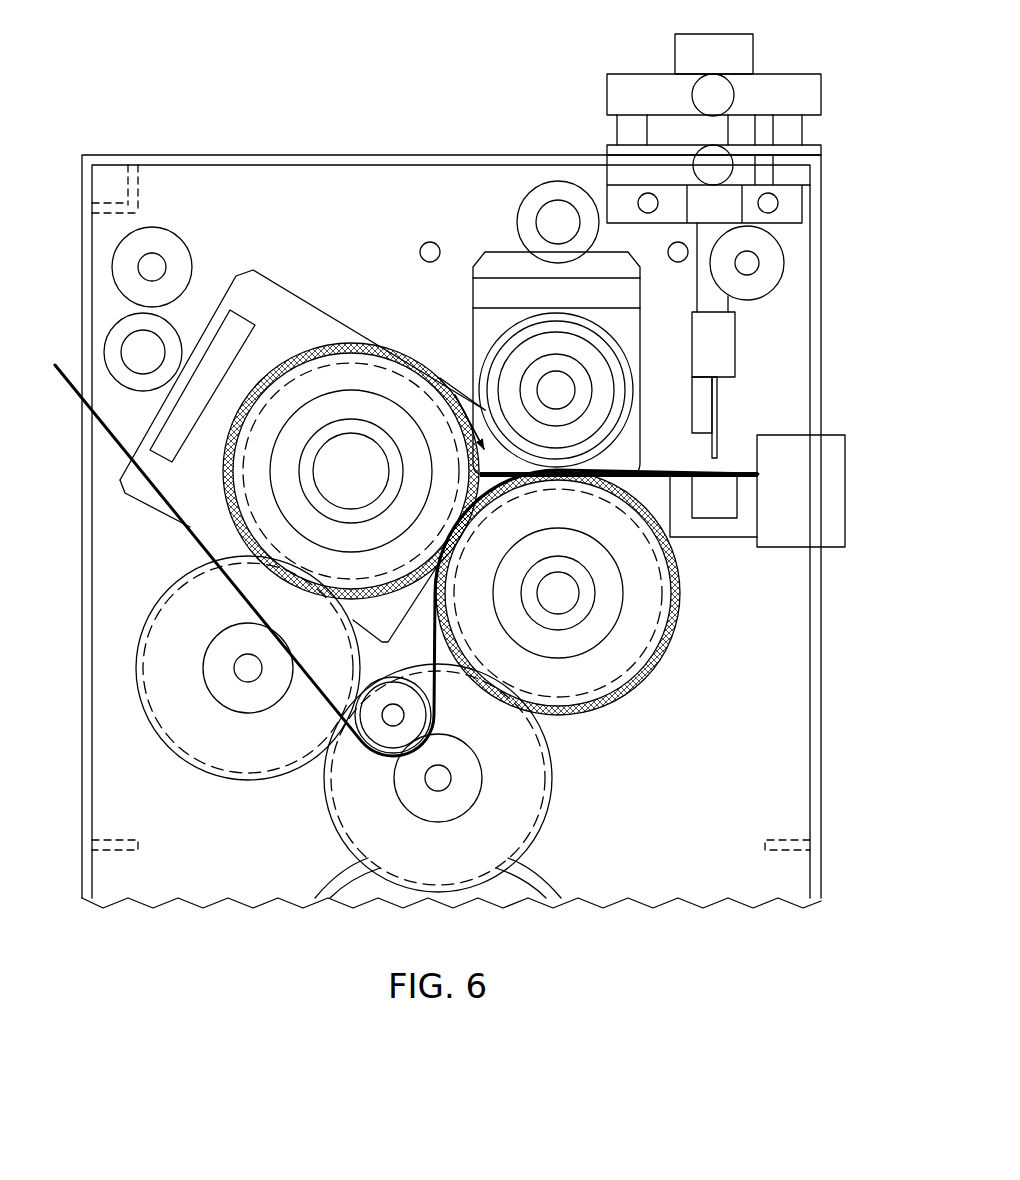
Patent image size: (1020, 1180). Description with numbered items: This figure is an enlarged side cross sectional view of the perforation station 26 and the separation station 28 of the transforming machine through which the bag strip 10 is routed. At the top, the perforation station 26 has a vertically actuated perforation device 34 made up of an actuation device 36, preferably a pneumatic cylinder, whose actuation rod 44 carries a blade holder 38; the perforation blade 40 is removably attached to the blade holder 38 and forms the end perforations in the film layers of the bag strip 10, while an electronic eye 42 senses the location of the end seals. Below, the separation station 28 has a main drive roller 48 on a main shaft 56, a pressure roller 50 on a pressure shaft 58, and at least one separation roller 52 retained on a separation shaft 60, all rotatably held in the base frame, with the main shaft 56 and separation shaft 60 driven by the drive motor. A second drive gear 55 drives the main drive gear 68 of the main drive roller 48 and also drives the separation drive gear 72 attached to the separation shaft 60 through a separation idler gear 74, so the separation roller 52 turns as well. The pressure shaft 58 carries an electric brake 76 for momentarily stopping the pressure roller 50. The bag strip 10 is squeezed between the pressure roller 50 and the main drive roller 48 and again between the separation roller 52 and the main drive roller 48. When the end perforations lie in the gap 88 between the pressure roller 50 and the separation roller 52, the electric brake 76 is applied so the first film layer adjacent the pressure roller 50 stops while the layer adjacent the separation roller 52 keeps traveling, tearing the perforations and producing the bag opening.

The bag strip 10 is at (658, 468).
The perforation station 26 is at (780, 320).
The separation station 28 is at (387, 247).
The vertically actuated perforation device 34 is at (578, 112).
The actuation device 36 is at (605, 76).
The blade holder 38 is at (735, 352).
The perforation blade 40 is at (717, 415).
The electronic eye 42 is at (845, 455).
The actuation rod 44 is at (706, 290).
The main drive roller 48 is at (677, 630).
The pressure roller 50 is at (628, 378).
The separation roller 52 is at (312, 360).
The second drive gear 55 is at (551, 782).
The main shaft 56 is at (560, 585).
The pressure shaft 58 is at (560, 388).
The separation shaft 60 is at (340, 450).
The main drive gear 68 is at (620, 677).
The separation drive gear 72 is at (220, 498).
The separation idler gear 74 is at (250, 782).
The electric brake 76 is at (515, 347).
The gap 88 is at (485, 408).